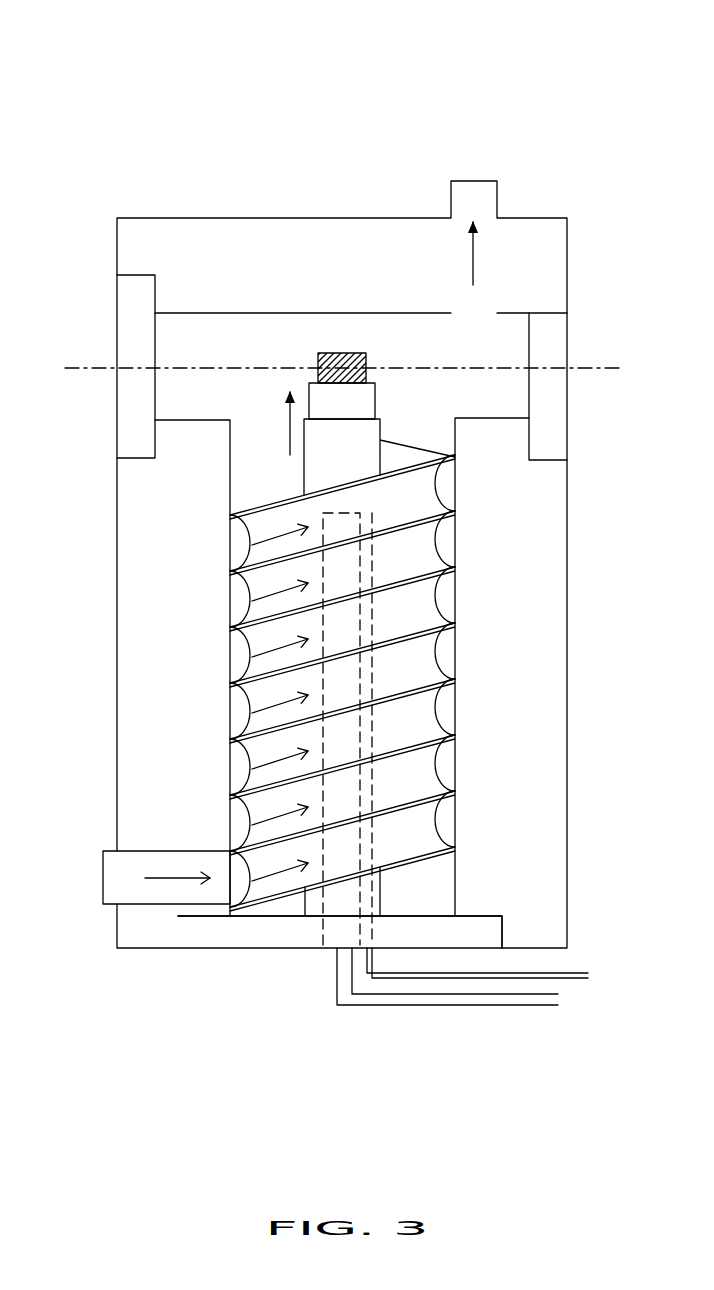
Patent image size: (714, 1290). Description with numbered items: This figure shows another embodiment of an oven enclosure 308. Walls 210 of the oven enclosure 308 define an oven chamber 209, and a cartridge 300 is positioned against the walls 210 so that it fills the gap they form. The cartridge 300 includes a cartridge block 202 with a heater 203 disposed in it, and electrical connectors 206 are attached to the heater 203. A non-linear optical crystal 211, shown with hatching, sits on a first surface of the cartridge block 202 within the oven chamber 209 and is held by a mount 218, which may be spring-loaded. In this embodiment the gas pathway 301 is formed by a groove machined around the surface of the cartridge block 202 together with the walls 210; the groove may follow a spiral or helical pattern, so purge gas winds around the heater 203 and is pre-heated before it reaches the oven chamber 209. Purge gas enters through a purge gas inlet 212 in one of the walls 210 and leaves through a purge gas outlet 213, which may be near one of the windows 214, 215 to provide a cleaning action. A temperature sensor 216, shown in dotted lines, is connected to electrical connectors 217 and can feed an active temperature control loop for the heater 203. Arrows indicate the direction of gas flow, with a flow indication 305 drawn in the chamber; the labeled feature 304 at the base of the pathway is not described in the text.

The oven enclosure 308 is at (342, 575).
The oven chamber 209 is at (215, 330).
The non-linear optical crystal 211 is at (342, 353).
The purge gas outlet 213 is at (451, 200).
The window 214 is at (117, 338).
The window 215 is at (567, 330).
The mount 218 is at (375, 395).
The flow path 305 is at (270, 468).
The gas pathway 301 is at (460, 488).
The walls 210 is at (540, 693).
The purge gas inlet 212 is at (117, 845).
The temperature sensor 216 is at (380, 875).
The cartridge 300 is at (503, 930).
The coil end 304 is at (237, 907).
The cartridge block 202 is at (272, 948).
The heater 203 is at (320, 932).
The electrical connectors 206 is at (523, 1007).
The electrical connectors 217 is at (576, 980).